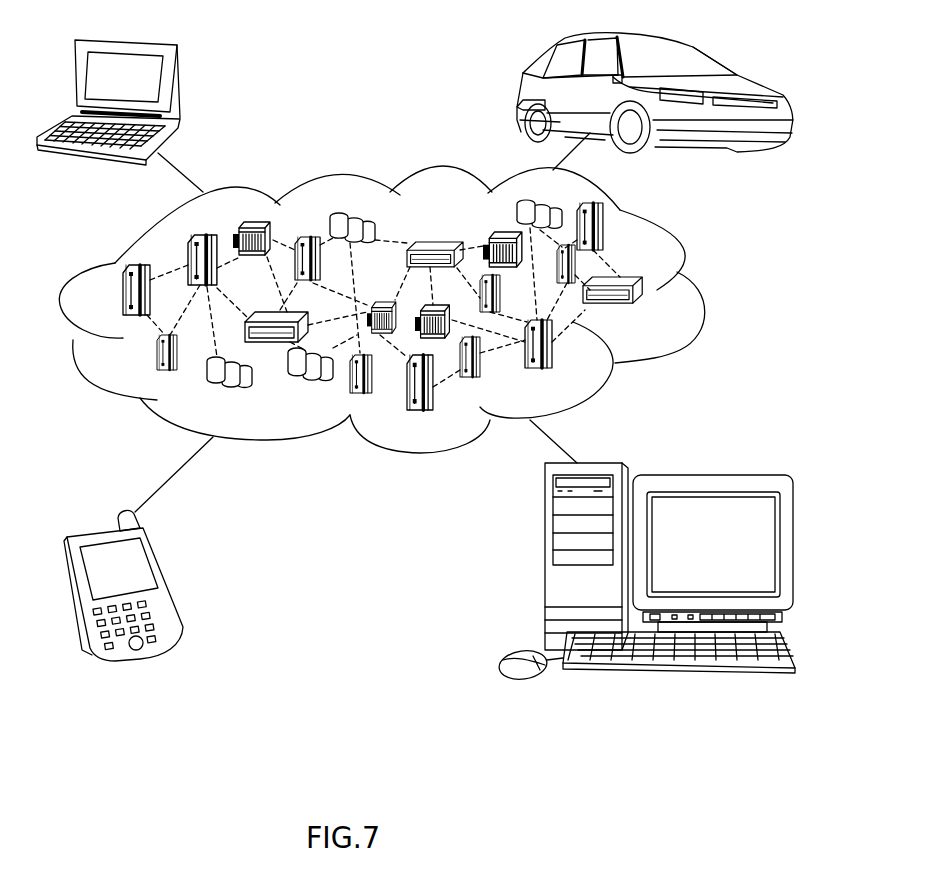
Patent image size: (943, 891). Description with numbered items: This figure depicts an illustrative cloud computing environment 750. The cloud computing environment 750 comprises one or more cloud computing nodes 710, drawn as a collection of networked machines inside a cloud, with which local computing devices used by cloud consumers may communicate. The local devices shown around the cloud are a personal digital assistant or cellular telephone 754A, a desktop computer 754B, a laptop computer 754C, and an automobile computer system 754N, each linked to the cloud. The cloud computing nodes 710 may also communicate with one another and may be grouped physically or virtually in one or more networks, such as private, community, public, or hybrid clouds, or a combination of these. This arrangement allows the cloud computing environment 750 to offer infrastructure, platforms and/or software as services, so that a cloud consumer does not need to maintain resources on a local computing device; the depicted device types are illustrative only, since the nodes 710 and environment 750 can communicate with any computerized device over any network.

The cloud computing nodes 710 is at (427, 309).
The cloud computing environment 750 is at (659, 307).
The personal digital assistant (PDA) or cellular telephone 754A is at (165, 580).
The desktop computer 754B is at (547, 563).
The laptop computer 754C is at (177, 79).
The automobile computer system 754N is at (523, 90).